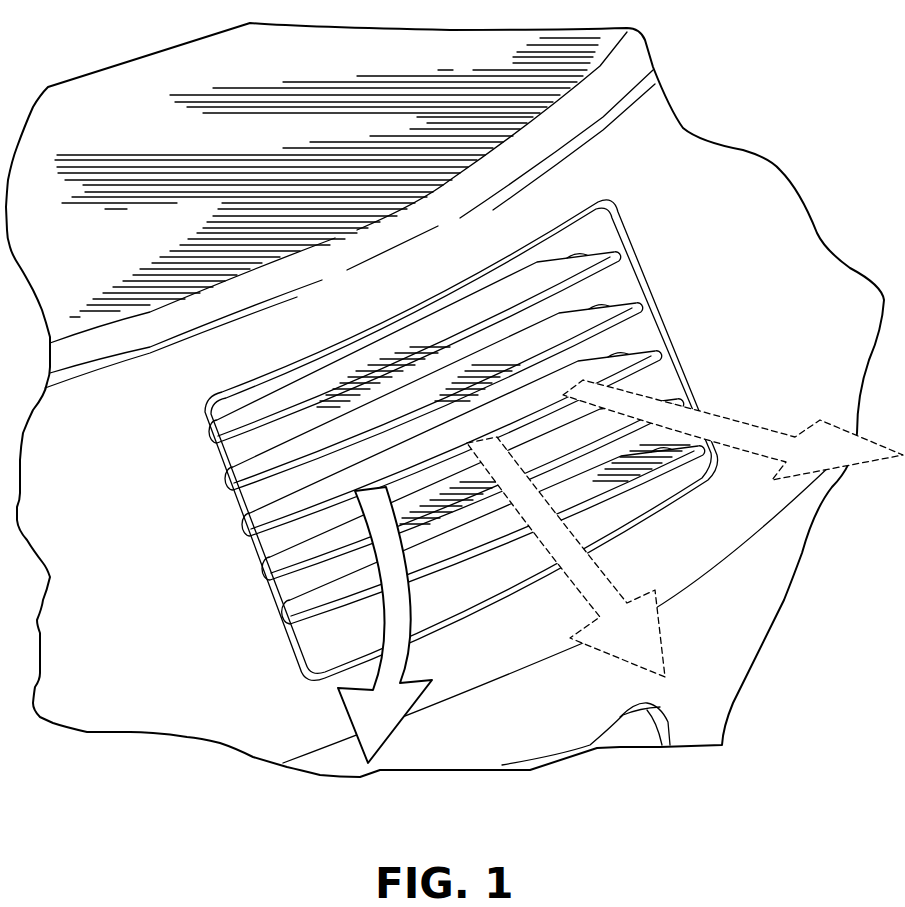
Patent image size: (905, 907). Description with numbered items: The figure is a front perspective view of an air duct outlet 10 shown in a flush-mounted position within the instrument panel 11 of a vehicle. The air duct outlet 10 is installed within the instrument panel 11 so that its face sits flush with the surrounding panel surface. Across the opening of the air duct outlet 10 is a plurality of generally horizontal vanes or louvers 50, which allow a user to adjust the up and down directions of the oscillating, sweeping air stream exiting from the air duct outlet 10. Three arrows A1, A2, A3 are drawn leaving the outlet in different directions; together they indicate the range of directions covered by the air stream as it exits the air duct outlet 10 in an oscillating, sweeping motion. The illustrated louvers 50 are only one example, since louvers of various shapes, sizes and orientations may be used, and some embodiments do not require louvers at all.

The air duct outlet 10 is at (665, 172).
The instrument panel 11 is at (772, 190).
The louvers 50 is at (305, 603).
The arrow A1 is at (383, 728).
The arrow A2 is at (660, 630).
The arrow A3 is at (858, 455).